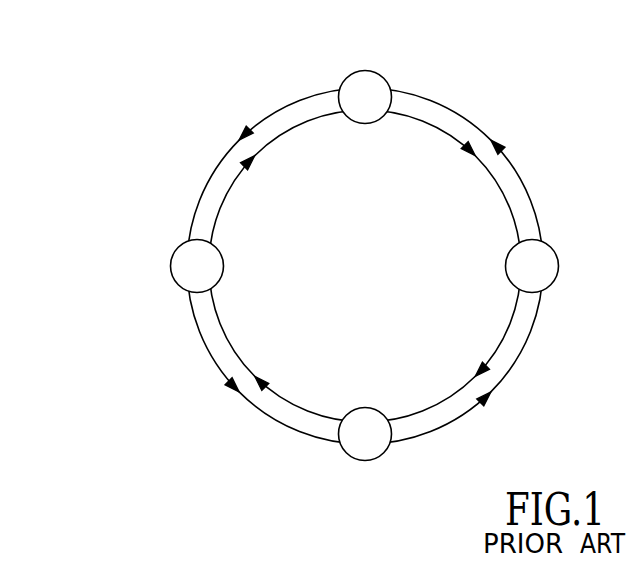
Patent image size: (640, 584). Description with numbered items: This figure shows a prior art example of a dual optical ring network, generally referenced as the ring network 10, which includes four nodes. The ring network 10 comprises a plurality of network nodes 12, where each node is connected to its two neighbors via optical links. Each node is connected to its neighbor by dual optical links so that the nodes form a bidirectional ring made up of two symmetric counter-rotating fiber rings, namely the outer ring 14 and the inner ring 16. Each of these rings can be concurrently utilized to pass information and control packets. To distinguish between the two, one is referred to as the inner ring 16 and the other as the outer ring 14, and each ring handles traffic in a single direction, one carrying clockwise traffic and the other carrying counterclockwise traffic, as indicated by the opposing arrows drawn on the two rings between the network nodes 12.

The ring network 10 is at (133, 104).
The network nodes 12 is at (372, 71).
The outer ring 14 is at (527, 190).
The inner ring 16 is at (499, 190).